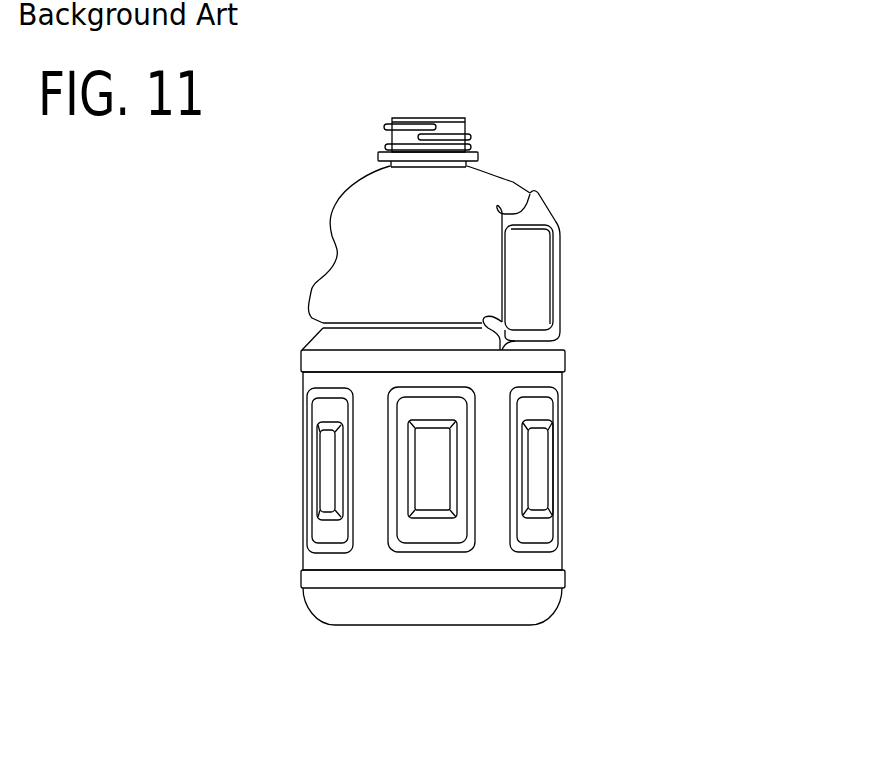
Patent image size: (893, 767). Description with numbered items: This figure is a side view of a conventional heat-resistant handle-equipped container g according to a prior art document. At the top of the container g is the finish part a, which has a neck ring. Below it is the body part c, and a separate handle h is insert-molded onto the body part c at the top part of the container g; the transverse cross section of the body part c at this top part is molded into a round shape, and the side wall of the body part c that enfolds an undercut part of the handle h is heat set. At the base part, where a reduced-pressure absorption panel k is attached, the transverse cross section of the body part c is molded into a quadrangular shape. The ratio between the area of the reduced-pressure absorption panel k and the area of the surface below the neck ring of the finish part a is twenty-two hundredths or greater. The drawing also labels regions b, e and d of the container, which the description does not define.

The finish part a is at (466, 125).
The shoulder portion b is at (352, 183).
The body part c is at (345, 229).
The container g is at (296, 287).
The handle h is at (548, 278).
The handle opening e is at (533, 305).
The reduced-pressure absorption panel k is at (428, 477).
The bottom portion d is at (389, 625).